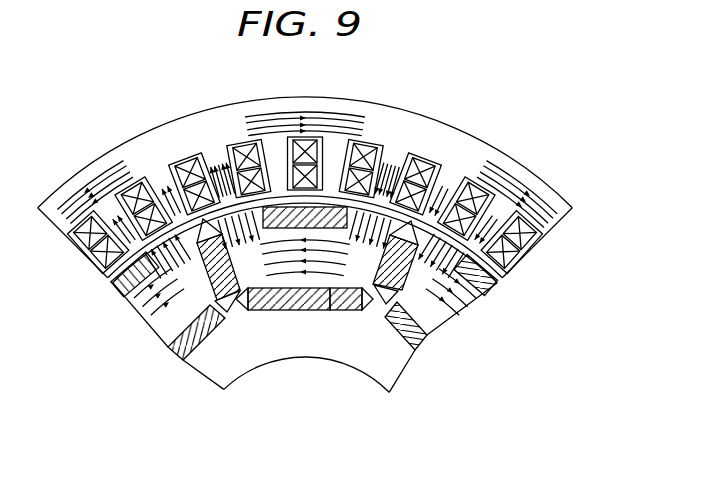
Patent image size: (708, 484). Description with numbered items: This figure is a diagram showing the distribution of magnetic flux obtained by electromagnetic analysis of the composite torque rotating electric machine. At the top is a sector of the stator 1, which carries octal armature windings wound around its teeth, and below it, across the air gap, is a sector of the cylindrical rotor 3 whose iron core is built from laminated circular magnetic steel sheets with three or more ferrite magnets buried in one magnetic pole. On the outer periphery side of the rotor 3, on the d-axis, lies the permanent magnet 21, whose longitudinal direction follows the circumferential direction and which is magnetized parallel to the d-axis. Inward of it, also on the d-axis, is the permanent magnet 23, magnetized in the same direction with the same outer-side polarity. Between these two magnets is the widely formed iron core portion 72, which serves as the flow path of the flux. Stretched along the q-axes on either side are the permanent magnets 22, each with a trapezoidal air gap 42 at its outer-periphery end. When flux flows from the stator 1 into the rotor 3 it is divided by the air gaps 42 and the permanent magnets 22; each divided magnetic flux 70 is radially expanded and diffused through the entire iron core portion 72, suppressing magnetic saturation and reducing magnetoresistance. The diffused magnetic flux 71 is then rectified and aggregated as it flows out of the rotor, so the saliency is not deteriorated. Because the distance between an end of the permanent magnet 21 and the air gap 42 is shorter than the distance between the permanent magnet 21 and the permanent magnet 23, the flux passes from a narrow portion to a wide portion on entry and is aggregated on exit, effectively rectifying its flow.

The stator 1 is at (427, 130).
The rotor 3 is at (313, 352).
The permanent magnet 21 is at (326, 207).
The permanent magnet 22 is at (242, 300).
The permanent magnet 23 is at (302, 310).
The air gap 42 is at (192, 230).
The divided magnetic flux 70 is at (388, 153).
The magnetic flux 71 is at (333, 272).
The iron core portion 72 is at (350, 290).